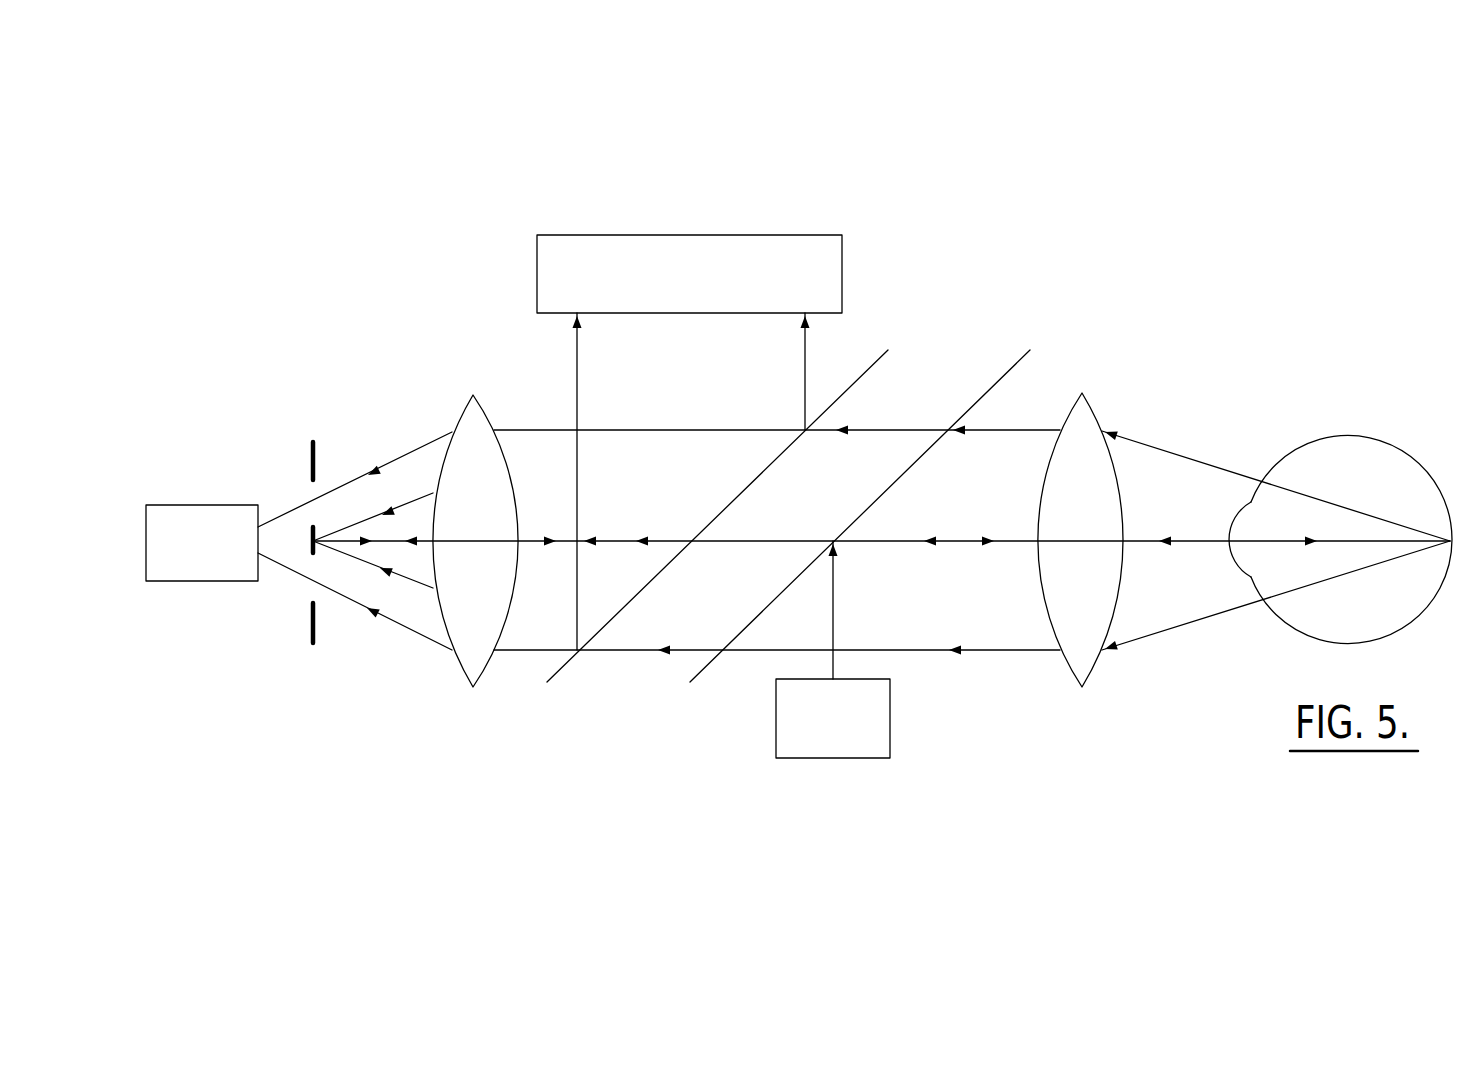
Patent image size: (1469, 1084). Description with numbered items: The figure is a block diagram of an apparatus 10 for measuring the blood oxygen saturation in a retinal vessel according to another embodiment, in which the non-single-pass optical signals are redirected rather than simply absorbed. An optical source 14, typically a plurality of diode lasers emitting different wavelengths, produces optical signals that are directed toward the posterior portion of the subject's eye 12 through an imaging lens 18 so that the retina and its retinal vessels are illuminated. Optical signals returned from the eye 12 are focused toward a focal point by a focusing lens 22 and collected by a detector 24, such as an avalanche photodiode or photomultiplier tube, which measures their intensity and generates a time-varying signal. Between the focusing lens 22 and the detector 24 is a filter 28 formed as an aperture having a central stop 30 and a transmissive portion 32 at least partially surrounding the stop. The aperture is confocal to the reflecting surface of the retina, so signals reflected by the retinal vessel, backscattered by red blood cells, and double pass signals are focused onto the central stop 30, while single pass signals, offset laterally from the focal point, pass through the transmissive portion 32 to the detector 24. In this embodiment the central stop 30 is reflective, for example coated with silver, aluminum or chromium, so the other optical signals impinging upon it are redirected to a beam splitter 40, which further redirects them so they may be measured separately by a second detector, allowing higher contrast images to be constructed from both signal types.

The apparatus 10 is at (1250, 283).
The eye 12 is at (1382, 455).
The optical source 14 is at (892, 720).
The imaging lens 18 is at (1083, 657).
The focusing lens 22 is at (473, 650).
The detector 24 is at (207, 503).
The filter 28 is at (335, 449).
The central stop 30 is at (310, 543).
The transmissive portion 32 is at (312, 457).
The beam splitter 40 is at (725, 497).